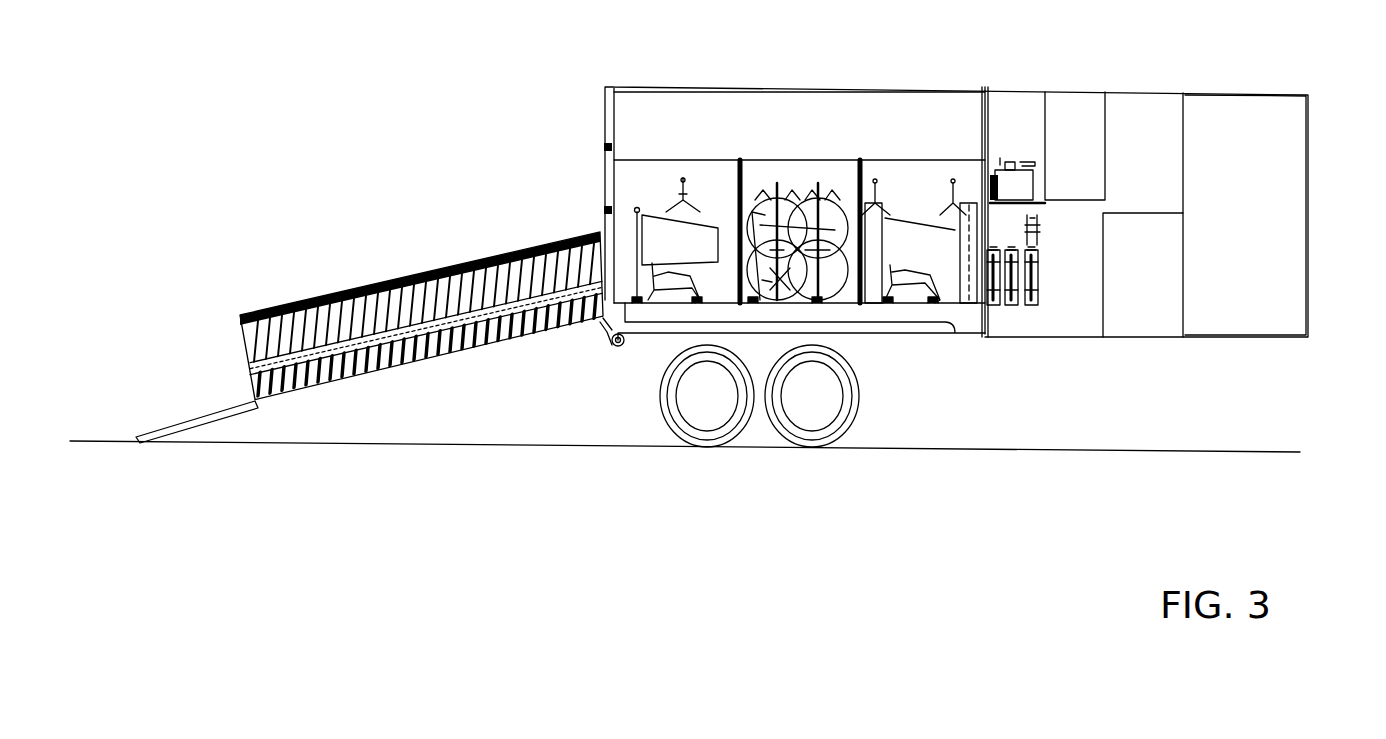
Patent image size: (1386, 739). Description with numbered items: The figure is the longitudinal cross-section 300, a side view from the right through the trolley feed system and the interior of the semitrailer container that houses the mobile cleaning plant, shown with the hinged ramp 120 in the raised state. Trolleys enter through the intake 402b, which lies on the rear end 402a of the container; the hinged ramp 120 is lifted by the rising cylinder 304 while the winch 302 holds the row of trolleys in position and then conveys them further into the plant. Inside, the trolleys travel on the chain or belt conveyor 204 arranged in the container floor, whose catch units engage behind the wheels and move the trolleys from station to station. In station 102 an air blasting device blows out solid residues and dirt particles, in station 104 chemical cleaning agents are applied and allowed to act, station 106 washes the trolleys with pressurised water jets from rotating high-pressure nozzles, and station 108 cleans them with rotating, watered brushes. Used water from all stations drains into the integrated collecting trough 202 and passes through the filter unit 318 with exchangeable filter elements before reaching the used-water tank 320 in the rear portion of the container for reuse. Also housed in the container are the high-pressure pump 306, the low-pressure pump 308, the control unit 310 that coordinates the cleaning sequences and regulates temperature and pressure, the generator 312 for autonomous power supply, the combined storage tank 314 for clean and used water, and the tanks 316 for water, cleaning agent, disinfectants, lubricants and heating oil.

The longitudinal cross-section C-D 300 is at (747, 245).
The rising cylinder 304 is at (600, 117).
The tanks 316 is at (652, 100).
The rear end of the container 402a is at (608, 147).
The intake 402b is at (608, 210).
The station #1b 104 is at (680, 176).
The station #2 106 is at (780, 176).
The station #3 108 is at (886, 168).
The high-pressure pump 306 is at (1006, 165).
The control unit 310 is at (1108, 148).
The generator 312 is at (1109, 222).
The combined storage tank 314 is at (1186, 186).
The used-water tank 320 is at (1272, 256).
The filter unit 318 is at (993, 305).
The low-pressure pump 308 is at (1035, 265).
The station #1a 102 is at (675, 316).
The winch 302 is at (615, 338).
The collecting trough 202 is at (631, 309).
The chain or belt conveyor 204 is at (598, 318).
The hinged ramp 120 is at (190, 421).